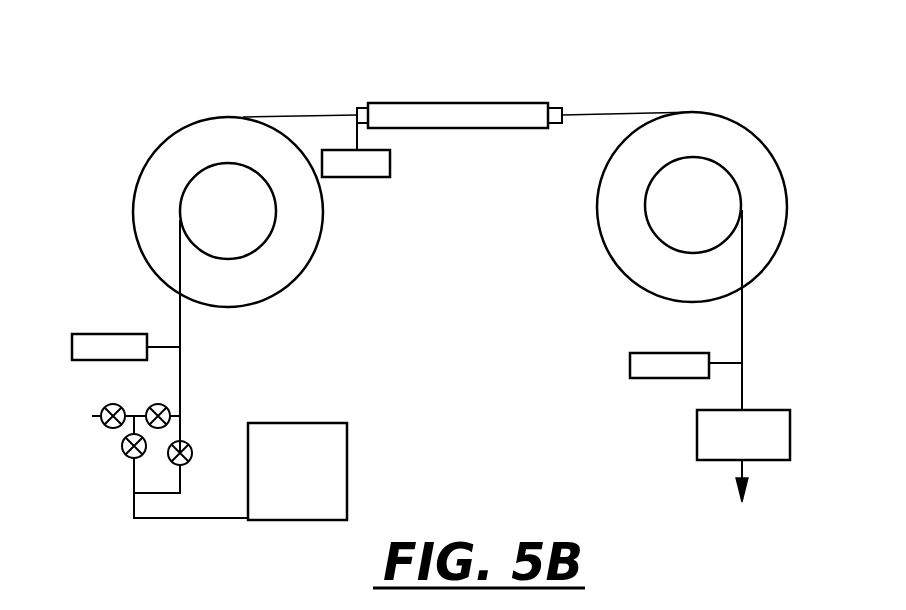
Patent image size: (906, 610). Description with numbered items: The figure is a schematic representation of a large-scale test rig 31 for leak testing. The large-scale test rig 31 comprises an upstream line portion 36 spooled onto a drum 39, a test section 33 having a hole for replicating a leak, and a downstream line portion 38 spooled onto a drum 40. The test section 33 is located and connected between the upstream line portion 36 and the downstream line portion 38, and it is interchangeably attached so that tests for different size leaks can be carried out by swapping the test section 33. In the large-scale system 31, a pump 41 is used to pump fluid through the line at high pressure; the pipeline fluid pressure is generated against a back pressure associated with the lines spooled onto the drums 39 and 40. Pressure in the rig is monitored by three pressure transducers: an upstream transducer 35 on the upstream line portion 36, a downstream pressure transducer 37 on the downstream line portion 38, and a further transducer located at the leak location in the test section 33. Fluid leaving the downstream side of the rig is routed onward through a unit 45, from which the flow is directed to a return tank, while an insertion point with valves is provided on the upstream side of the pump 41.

The large-scale test rig 31 is at (432, 60).
The test section 33 is at (515, 112).
The upstream transducer 35 is at (107, 343).
The upstream line portion 36 is at (290, 115).
The downstream pressure transducer 37 is at (660, 367).
The downstream line portion 38 is at (627, 112).
The drum 39 is at (278, 257).
The drum 40 is at (636, 257).
The pump 41 is at (297, 471).
The return unit 45 is at (743, 456).